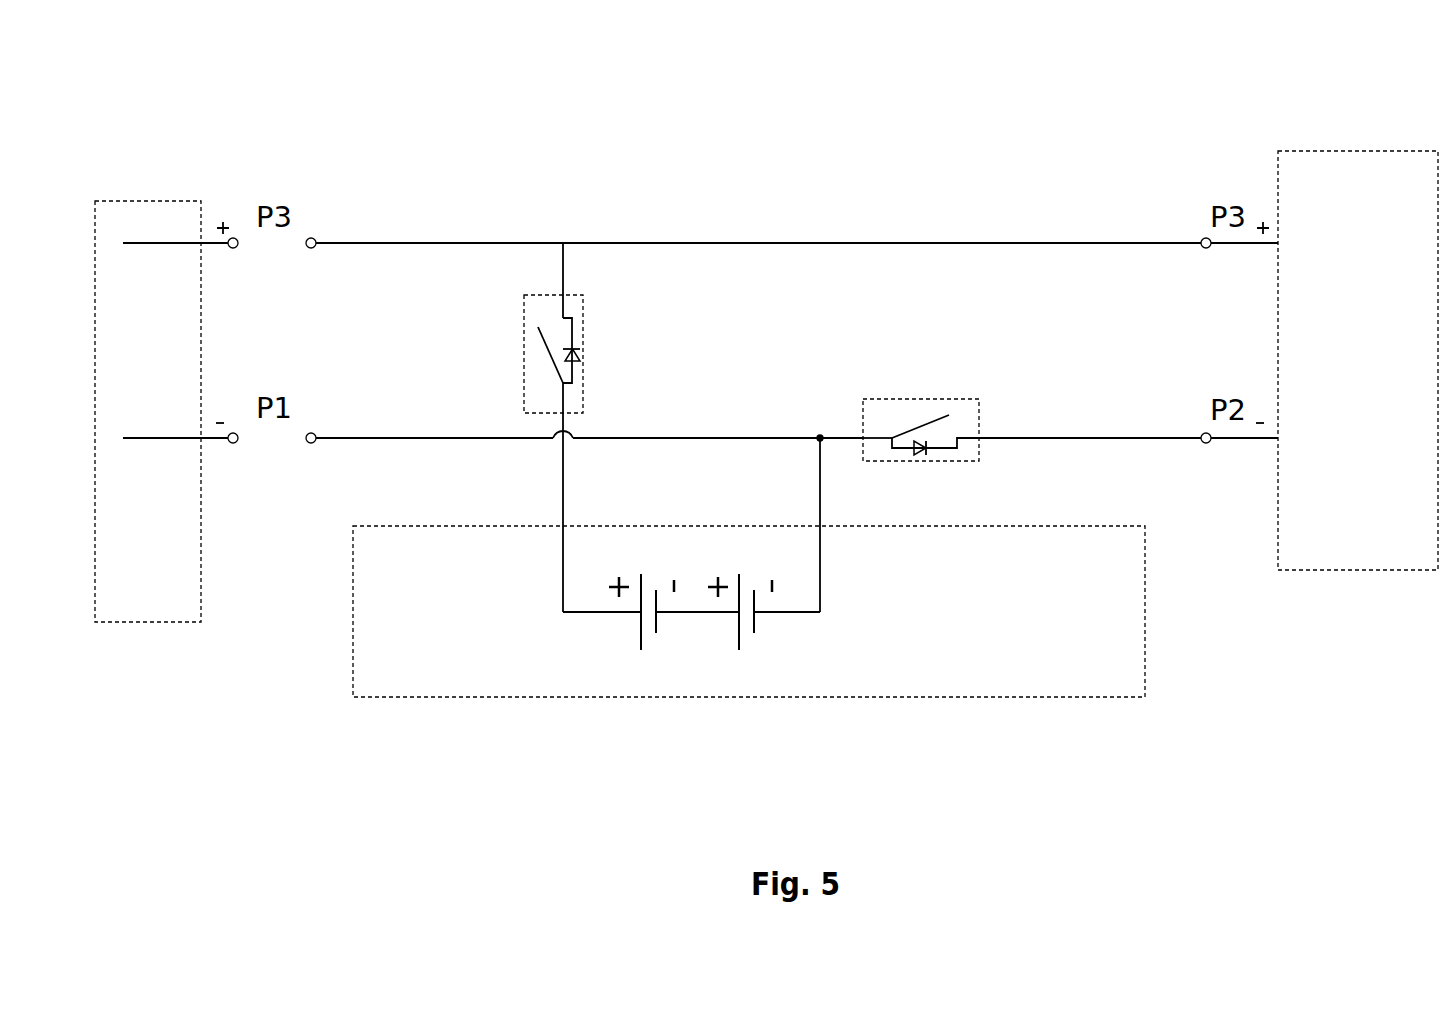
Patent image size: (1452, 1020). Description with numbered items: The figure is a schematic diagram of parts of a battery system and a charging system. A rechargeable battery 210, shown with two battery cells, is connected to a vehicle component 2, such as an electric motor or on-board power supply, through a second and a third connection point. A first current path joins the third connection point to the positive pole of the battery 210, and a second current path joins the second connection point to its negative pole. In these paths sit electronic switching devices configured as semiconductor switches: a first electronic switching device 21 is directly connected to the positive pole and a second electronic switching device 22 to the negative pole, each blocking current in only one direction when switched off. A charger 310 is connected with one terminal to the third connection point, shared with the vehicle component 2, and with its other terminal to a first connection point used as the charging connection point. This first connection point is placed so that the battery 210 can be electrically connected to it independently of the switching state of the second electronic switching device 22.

The vehicle component 2 is at (1368, 151).
The first electronic switching device 21 is at (583, 383).
The second electronic switching device 22 is at (973, 461).
The rechargeable battery 210 is at (353, 672).
The charger 310 is at (160, 622).